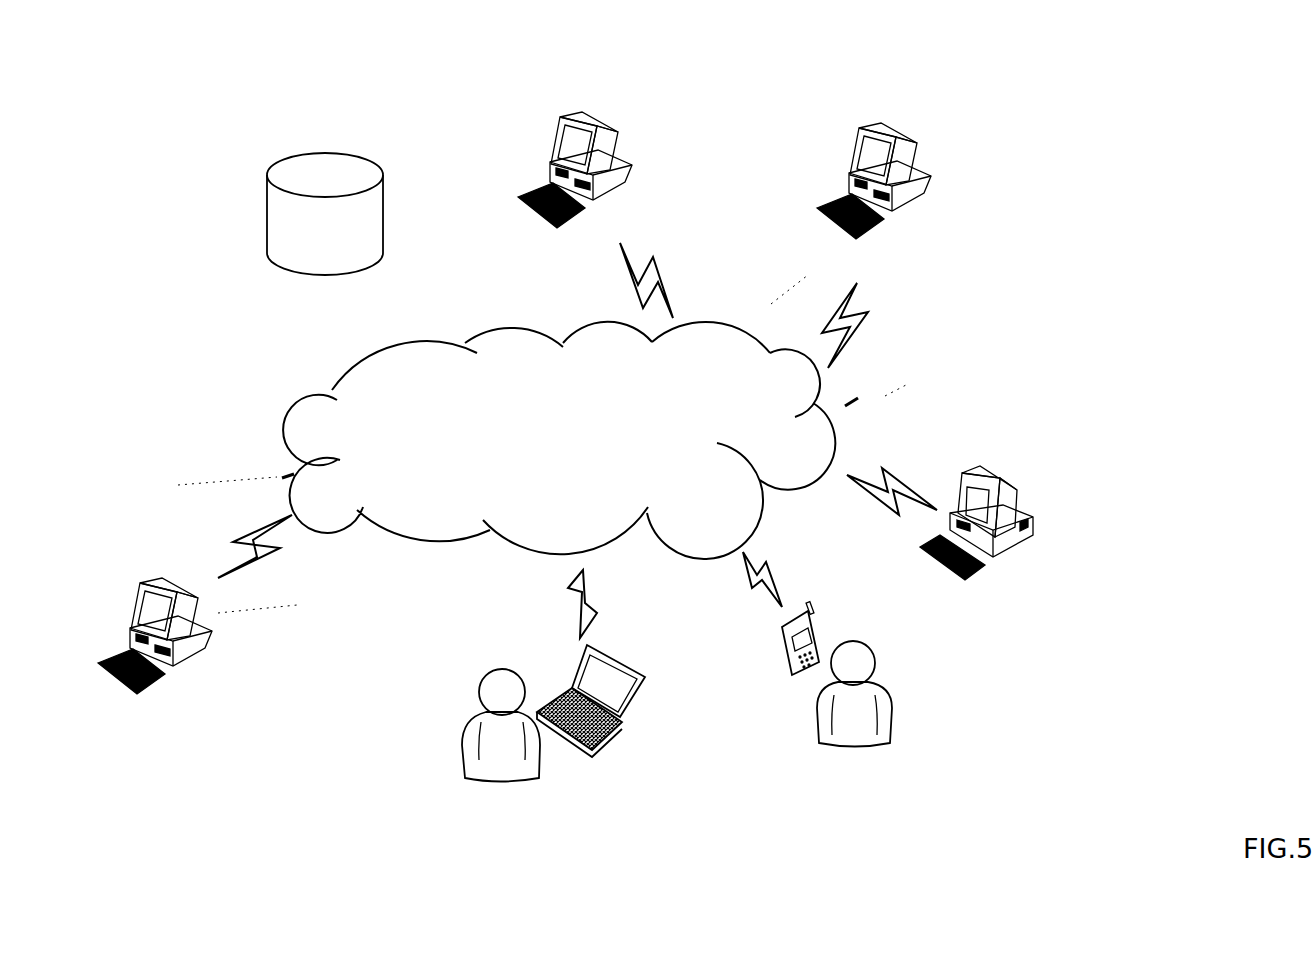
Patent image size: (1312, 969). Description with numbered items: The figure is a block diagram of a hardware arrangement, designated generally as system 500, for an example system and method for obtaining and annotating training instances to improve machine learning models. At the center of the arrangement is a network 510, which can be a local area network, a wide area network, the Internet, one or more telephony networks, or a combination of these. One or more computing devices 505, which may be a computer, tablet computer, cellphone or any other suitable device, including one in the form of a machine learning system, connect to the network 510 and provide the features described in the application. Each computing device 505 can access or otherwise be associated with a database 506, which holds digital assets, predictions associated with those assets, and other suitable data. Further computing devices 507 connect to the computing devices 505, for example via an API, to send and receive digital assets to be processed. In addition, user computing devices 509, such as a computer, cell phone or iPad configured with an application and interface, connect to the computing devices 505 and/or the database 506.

The system 500 is at (1142, 83).
The computing device 505 is at (730, 240).
The database 506 is at (562, 332).
The computing device 507 is at (577, 580).
The user computing device 509 is at (677, 667).
The network 510 is at (542, 444).